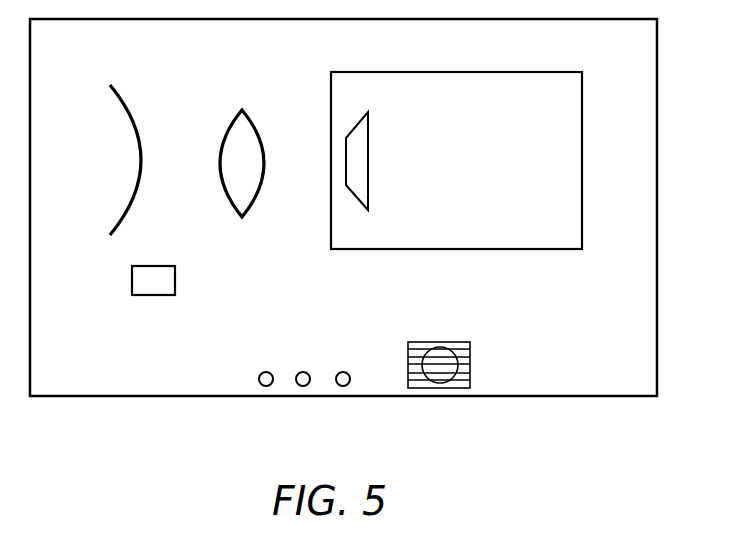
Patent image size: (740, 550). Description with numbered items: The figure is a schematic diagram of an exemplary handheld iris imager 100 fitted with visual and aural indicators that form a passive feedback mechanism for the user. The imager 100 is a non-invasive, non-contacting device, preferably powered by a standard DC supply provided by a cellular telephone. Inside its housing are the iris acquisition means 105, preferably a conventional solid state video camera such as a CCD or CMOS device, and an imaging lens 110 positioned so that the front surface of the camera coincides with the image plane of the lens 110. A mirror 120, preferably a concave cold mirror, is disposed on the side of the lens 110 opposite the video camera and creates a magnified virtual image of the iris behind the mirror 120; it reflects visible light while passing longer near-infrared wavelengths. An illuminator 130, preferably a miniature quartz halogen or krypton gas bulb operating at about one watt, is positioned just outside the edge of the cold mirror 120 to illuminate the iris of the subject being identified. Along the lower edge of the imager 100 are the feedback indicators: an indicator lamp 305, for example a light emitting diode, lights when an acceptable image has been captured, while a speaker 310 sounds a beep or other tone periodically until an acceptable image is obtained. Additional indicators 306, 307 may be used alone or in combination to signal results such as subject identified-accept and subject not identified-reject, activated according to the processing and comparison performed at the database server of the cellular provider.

The handheld imager 100 is at (645, 52).
The iris acquisition means 105 is at (577, 240).
The imaging lens 110 is at (257, 127).
The mirror 120 is at (130, 112).
The illuminator 130 is at (152, 295).
The indicator lamp 305 is at (263, 386).
The additional indicator 306 is at (309, 386).
The additional indicator 307 is at (349, 385).
The speaker 310 is at (458, 396).